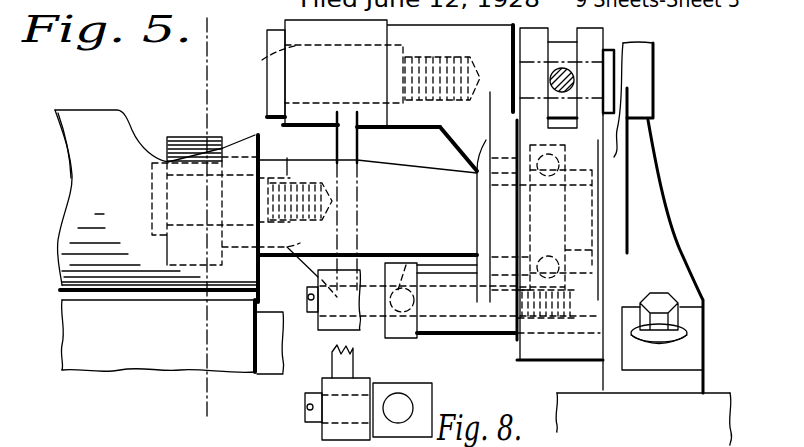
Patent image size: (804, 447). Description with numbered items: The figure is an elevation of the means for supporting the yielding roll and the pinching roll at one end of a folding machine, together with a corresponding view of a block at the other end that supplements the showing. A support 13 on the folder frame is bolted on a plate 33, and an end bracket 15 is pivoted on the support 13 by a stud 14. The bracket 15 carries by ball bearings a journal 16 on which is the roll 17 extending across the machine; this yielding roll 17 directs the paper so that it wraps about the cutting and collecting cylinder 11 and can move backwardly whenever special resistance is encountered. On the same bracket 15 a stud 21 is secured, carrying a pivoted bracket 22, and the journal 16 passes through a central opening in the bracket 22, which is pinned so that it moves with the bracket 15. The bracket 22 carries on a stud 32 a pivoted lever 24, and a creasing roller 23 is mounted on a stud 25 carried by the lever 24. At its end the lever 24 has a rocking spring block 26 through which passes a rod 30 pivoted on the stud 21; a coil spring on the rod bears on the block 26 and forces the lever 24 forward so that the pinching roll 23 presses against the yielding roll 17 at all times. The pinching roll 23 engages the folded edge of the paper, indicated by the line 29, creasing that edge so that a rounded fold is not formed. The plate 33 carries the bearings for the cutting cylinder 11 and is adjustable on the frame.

In FIG. 5, the cutting and collecting cylinder 11 is at (128, 363).
In FIG. 5, the support 13 is at (648, 193).
In FIG. 5, the stud 14 is at (565, 330).
In FIG. 5, the end bracket 15 is at (590, 155).
In FIG. 5, the journal 16 is at (312, 245).
In FIG. 5, the roll 17 is at (80, 205).
In FIG. 5, the stud 21 is at (480, 318).
In FIG. 5, the pivoted bracket 22 is at (465, 133).
In FIG. 5, the creasing roller 23 is at (190, 128).
In FIG. 5, the pivoted lever 24 is at (345, 160).
In FIG. 8, the pivoted lever 24 is at (340, 363).
In FIG. 5, the stud 25 is at (193, 220).
In FIG. 8, the rocking spring block 26 is at (398, 386).
In FIG. 5, the line 29 is at (207, 97).
In FIG. 5, the rod 30 is at (407, 264).
In FIG. 5, the stud 32 is at (267, 60).
In FIG. 5, the plate 33 is at (707, 403).